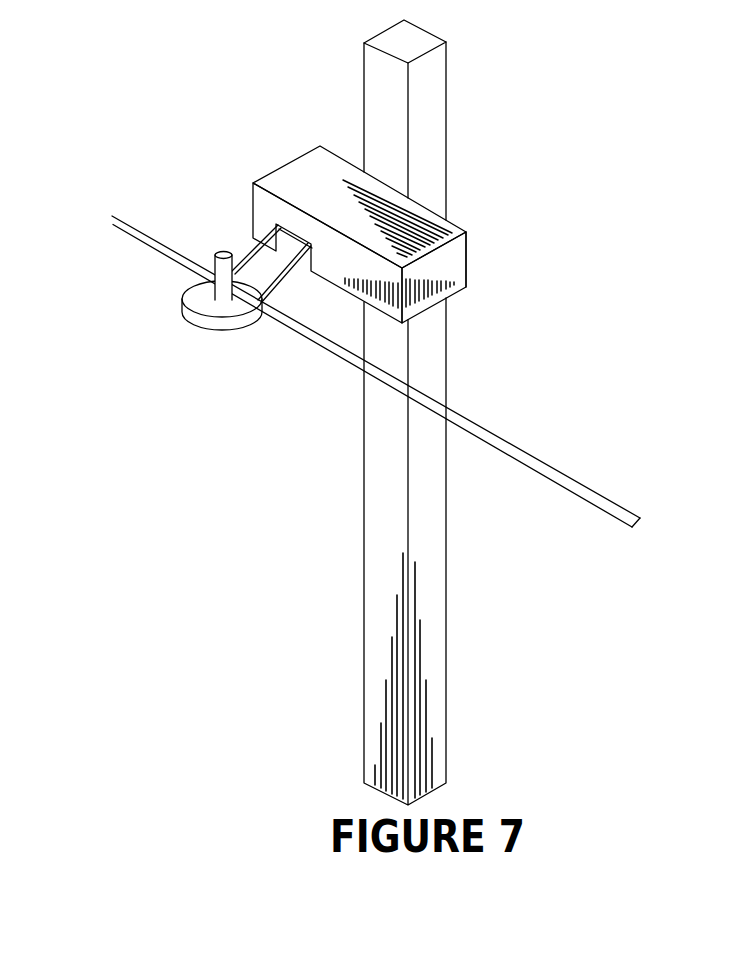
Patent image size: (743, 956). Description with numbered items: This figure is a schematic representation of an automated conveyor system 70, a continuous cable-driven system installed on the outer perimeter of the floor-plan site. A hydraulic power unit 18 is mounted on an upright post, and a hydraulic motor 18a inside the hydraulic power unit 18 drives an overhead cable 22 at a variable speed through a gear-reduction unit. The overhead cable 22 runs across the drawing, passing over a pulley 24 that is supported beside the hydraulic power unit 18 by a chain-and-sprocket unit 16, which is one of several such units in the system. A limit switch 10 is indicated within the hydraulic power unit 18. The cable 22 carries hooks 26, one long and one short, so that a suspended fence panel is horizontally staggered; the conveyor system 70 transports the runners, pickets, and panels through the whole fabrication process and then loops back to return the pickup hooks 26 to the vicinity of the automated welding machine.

The automated conveyor system 70 is at (478, 135).
The hydraulic power unit 18 is at (477, 213).
The hydraulic motor 18a is at (493, 290).
The limit switch 10 is at (448, 268).
The chain-and-sprocket unit 16 is at (182, 329).
The pulley 24 is at (245, 323).
The overhead cable 22 is at (480, 432).
The hook 26 is at (643, 540).